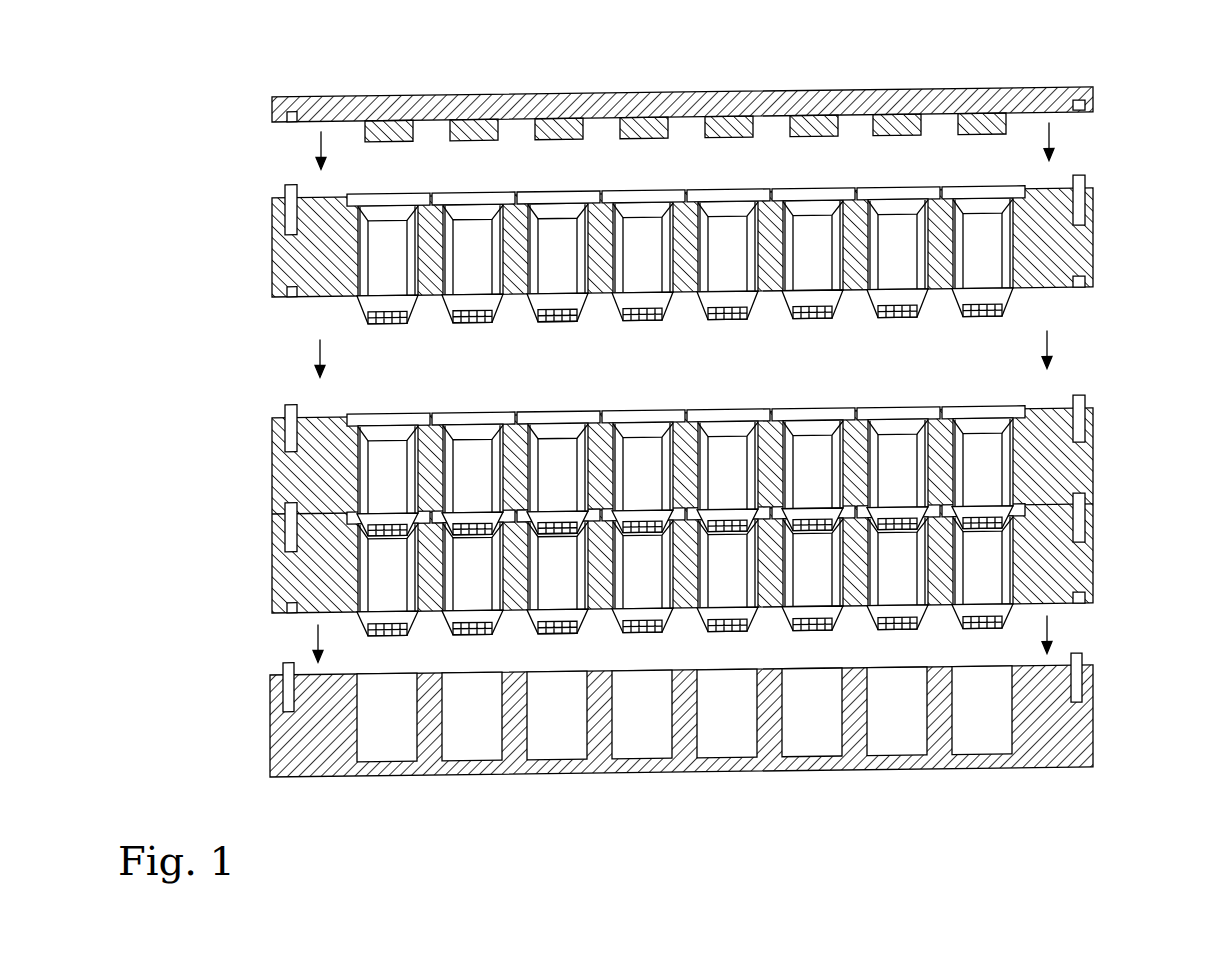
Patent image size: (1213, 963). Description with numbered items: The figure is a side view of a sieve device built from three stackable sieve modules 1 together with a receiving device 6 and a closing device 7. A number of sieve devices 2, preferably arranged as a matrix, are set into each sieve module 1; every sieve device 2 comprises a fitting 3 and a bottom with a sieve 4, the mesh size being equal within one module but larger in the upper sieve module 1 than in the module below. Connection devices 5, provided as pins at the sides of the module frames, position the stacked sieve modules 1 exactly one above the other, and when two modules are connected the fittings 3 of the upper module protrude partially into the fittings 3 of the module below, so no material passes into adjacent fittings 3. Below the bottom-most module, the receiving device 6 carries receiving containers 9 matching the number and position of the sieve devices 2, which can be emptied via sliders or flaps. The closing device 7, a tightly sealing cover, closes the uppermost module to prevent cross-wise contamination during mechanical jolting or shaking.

The sieve module 1 is at (1112, 213).
The sieve device 2 is at (812, 185).
The fitting 3 is at (921, 278).
The sieve 4 is at (985, 318).
The connection device 5 is at (1080, 396).
The receiving device 6 is at (1084, 727).
The closing device 7 is at (1056, 93).
The receiving container 9 is at (981, 738).